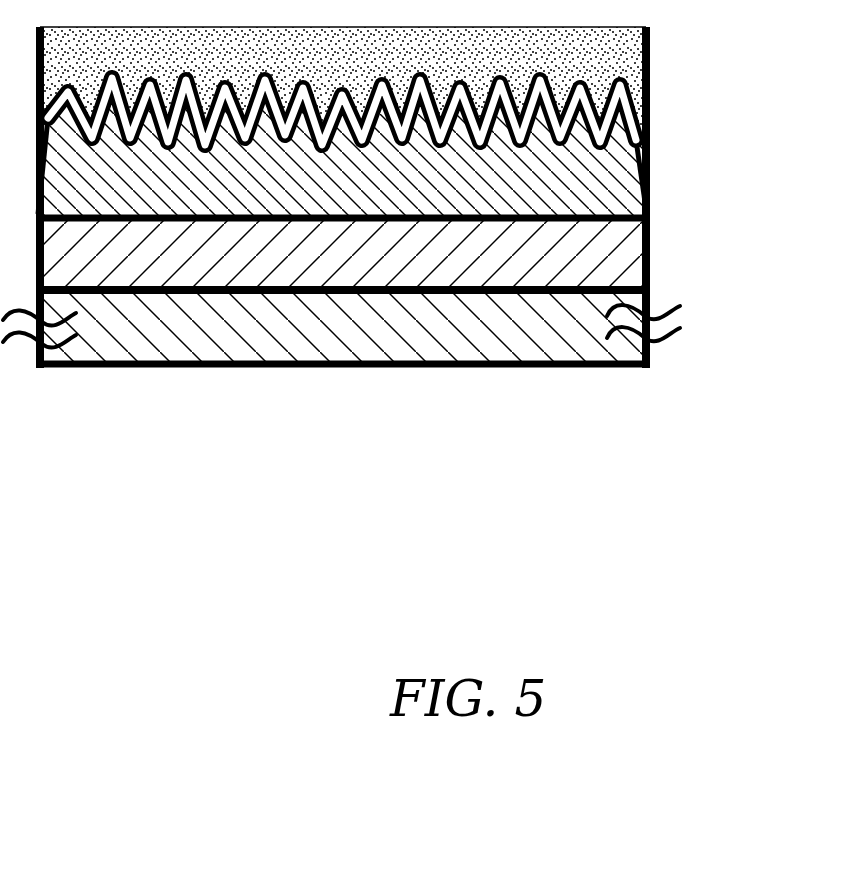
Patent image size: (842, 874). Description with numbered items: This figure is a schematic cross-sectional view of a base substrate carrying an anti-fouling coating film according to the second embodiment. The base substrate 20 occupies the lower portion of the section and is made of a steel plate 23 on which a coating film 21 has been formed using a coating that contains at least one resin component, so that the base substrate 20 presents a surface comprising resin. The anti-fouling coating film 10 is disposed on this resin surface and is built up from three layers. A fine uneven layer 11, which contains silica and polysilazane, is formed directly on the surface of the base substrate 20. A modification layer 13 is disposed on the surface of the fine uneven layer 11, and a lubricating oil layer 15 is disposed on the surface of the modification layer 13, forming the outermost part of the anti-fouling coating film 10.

The anti-fouling coating film 10 is at (747, 72).
The fine uneven layer 11 is at (650, 176).
The modification layer 13 is at (650, 121).
The lubricating oil layer 15 is at (650, 73).
The base substrate 20 is at (749, 235).
The coating film 21 is at (650, 243).
The steel plate 23 is at (650, 338).